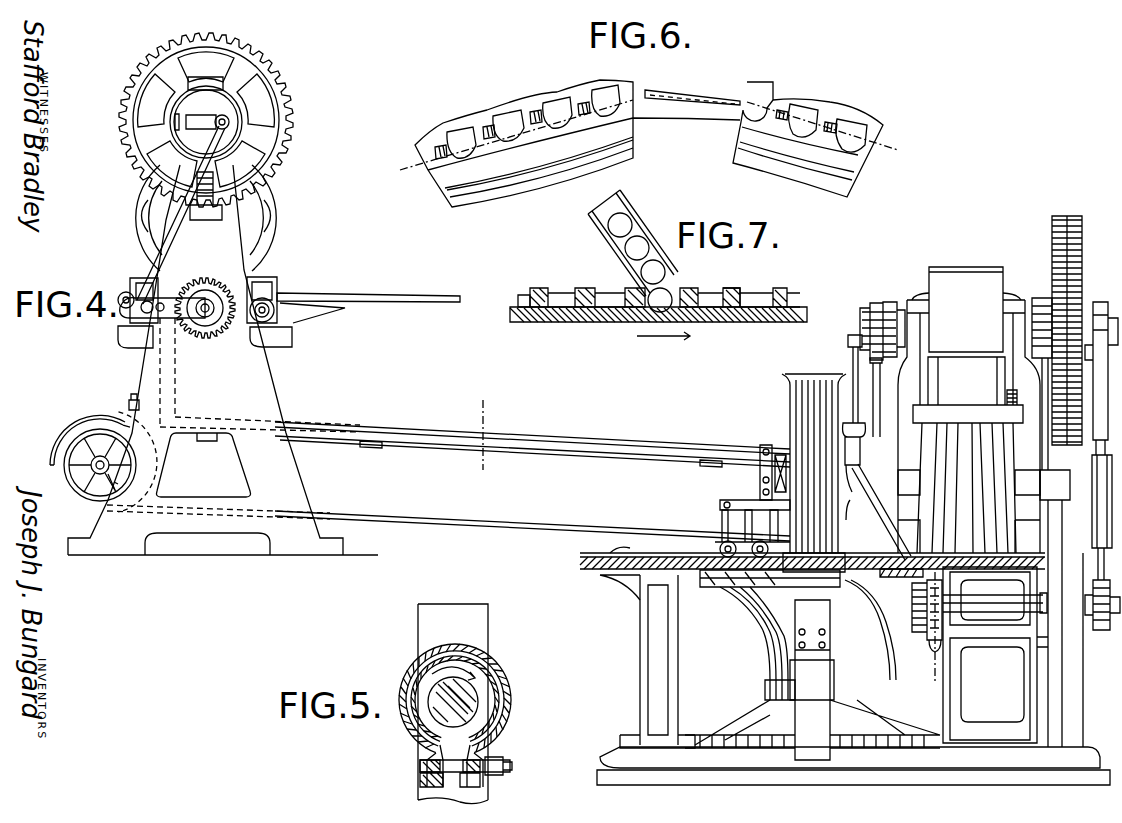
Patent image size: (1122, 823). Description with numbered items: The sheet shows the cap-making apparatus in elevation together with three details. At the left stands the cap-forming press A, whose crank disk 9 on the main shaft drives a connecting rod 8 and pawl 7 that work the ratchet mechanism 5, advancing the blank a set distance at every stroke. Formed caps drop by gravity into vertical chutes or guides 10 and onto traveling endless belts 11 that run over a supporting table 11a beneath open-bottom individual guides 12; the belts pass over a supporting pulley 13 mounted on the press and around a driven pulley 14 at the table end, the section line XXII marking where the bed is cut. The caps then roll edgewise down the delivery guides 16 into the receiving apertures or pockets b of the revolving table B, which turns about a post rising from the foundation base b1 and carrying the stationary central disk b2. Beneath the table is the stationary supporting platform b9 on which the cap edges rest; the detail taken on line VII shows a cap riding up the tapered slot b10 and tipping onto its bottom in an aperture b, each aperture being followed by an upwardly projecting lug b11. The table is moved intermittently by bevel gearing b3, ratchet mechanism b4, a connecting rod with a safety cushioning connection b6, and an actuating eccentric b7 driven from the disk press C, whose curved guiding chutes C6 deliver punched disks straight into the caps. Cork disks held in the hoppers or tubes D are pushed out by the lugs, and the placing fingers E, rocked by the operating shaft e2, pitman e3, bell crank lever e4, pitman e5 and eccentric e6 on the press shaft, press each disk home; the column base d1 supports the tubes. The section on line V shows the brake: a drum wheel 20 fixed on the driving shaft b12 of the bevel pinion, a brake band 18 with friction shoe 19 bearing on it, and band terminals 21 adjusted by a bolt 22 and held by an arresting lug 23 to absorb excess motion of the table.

In FIG. 4, the cap-forming press A is at (223, 360).
In FIG. 4, the crank disk 9 is at (206, 120).
In FIG. 4, the connecting rod 8 is at (165, 243).
In FIG. 4, the pawl 7 is at (170, 292).
In FIG. 4, the ratchet mechanism 5 is at (212, 284).
In FIG. 4, the vertical chutes or guides 10 is at (157, 366).
In FIG. 4, the traveling endless belts 11 is at (125, 425).
In FIG. 4, the supporting pulley 13 is at (85, 497).
In FIG. 4, the individual guides 12 is at (352, 425).
In FIG. 4, the section line XXII. XXII. XXII is at (479, 436).
In FIG. 4, the supporting table 11a is at (616, 460).
In FIG. 4, the driven pulley 14 is at (770, 468).
In FIG. 4, the disk hoppers or tubes D is at (814, 459).
In FIG. 4, the column base d1 is at (813, 663).
In FIG. 4, the pitman e3 is at (755, 492).
In FIG. 4, the operating shaft e2 is at (720, 506).
In FIG. 4, the placing fingers E is at (720, 538).
In FIG. 4, the revolving table B is at (580, 557).
In FIG. 6, the revolving table B is at (440, 173).
In FIG. 7, the revolving table B is at (536, 292).
In FIG. 4, the receiving apertures or pockets b is at (660, 553).
In FIG. 6, the receiving apertures or pockets b is at (512, 118).
In FIG. 7, the receiving apertures or pockets b is at (577, 296).
In FIG. 4, the stationary central disk or platform b2 is at (705, 566).
In FIG. 4, the stationary supporting platform b9 is at (580, 572).
In FIG. 7, the stationary supporting platform b9 is at (745, 320).
In FIG. 4, the foundation base b1 is at (865, 770).
In FIG. 4, the disk press C is at (969, 391).
In FIG. 4, the curved guiding chutes C6 is at (990, 530).
In FIG. 4, the eccentric e6 is at (867, 313).
In FIG. 4, the pitman e5 is at (884, 397).
In FIG. 4, the bell crank lever e4 is at (862, 440).
In FIG. 4, the delivery guides 16 is at (872, 508).
In FIG. 7, the delivery guides 16 is at (596, 232).
In FIG. 4, the actuating eccentric b7 is at (1100, 312).
In FIG. 4, the safety cushioning connection b6 is at (1080, 556).
In FIG. 4, the ratchet mechanism b4 is at (1105, 630).
In FIG. 4, the driving shaft b12 is at (990, 607).
In FIG. 5, the driving shaft b12 is at (440, 708).
In FIG. 4, the bevel gearing b3 is at (912, 612).
In FIG. 4, the section line V. V. V is at (940, 690).
In FIG. 5, the friction shoe 19 is at (503, 672).
In FIG. 5, the brake band 18 is at (513, 700).
In FIG. 5, the drum wheel 20 is at (418, 663).
In FIG. 5, the bolt 22 is at (513, 767).
In FIG. 5, the arresting lug 23 is at (420, 780).
In FIG. 5, the terminals of the brake band 21 is at (440, 791).
In FIG. 6, the tapered slot b10 is at (697, 93).
In FIG. 7, the tapered slot b10 is at (692, 310).
In FIG. 6, the section line VII. VII. VII is at (408, 172).
In FIG. 7, the upwardly projecting lug b11 is at (732, 292).